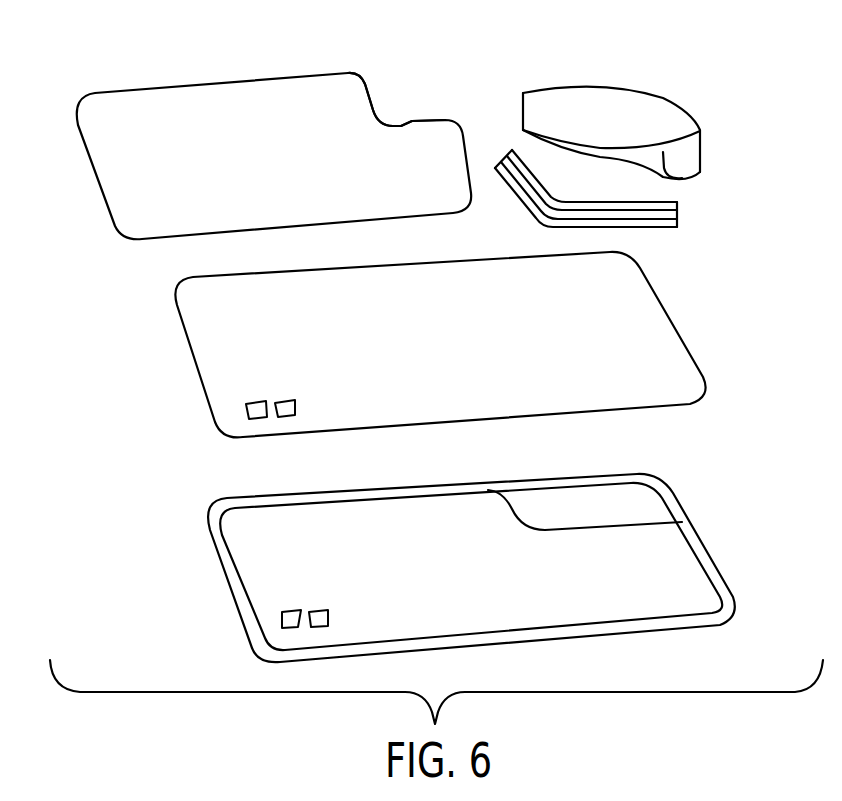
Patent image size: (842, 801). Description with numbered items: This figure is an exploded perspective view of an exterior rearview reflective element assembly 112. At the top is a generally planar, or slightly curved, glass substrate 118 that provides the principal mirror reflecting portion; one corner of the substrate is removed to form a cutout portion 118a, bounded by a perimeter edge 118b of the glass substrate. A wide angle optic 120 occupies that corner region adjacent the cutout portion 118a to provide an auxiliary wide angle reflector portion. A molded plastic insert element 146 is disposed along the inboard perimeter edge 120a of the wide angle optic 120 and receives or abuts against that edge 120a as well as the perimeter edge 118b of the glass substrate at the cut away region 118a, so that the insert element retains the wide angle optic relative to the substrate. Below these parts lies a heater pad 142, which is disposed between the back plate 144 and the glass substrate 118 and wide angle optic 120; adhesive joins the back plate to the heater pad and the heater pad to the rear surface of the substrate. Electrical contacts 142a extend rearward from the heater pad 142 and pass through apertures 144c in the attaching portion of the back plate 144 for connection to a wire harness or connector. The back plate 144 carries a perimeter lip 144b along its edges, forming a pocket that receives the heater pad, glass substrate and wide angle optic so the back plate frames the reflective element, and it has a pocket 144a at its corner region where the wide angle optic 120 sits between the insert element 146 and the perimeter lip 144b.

The exterior rearview reflective element assembly 112 is at (248, 66).
The glass substrate 118 is at (102, 238).
The cutout portion 118a is at (389, 99).
The perimeter edge of the glass substrate 118b is at (403, 121).
The wide angle optic 120 is at (696, 104).
The inboard perimeter edge of wide angle optic 120a is at (682, 178).
The insert element 146 is at (698, 223).
The heater pad 142 is at (680, 336).
The electrical contacts 142a is at (233, 421).
The back plate 144 is at (742, 577).
The pocket 144a is at (605, 497).
The perimeter lip 144b is at (673, 498).
The apertures 144c is at (266, 631).